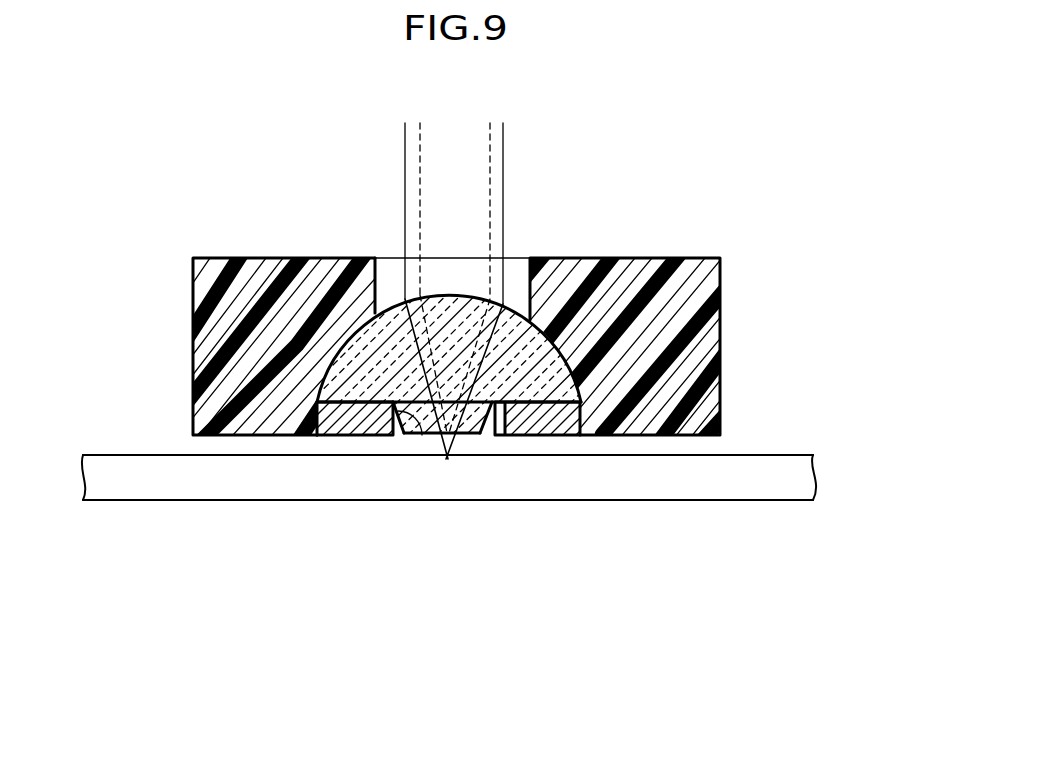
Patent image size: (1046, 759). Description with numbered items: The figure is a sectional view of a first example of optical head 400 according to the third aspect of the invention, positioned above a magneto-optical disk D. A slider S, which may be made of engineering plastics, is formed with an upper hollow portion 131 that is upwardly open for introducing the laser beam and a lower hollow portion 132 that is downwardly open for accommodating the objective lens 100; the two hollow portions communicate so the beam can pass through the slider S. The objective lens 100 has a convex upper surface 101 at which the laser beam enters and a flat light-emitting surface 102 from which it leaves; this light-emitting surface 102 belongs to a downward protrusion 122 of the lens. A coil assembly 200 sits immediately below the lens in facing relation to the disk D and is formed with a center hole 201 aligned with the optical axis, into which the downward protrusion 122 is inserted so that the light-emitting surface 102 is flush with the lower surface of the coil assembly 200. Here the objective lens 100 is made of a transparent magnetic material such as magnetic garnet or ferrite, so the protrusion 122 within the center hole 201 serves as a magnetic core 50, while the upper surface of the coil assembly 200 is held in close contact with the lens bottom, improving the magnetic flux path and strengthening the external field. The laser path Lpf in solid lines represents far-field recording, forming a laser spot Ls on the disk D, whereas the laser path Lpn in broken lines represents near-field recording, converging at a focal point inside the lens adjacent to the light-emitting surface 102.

The optical head 400 is at (775, 293).
The slider S is at (717, 248).
The lower hollow portion 132 is at (333, 349).
The upper hollow portion 131 is at (377, 278).
The coil assembly 200 is at (340, 436).
The center hole 201 is at (422, 436).
The magnetic core 50 is at (490, 413).
The objective lens 100 is at (512, 305).
The convex upper surface 101 is at (452, 292).
The light-emitting surface 102 is at (482, 436).
The downward protrusion 122 is at (430, 436).
The laser path Lpf is at (505, 150).
The laser path Lpn is at (418, 150).
The laser spot Ls is at (451, 457).
The magneto-optical disk D is at (770, 472).